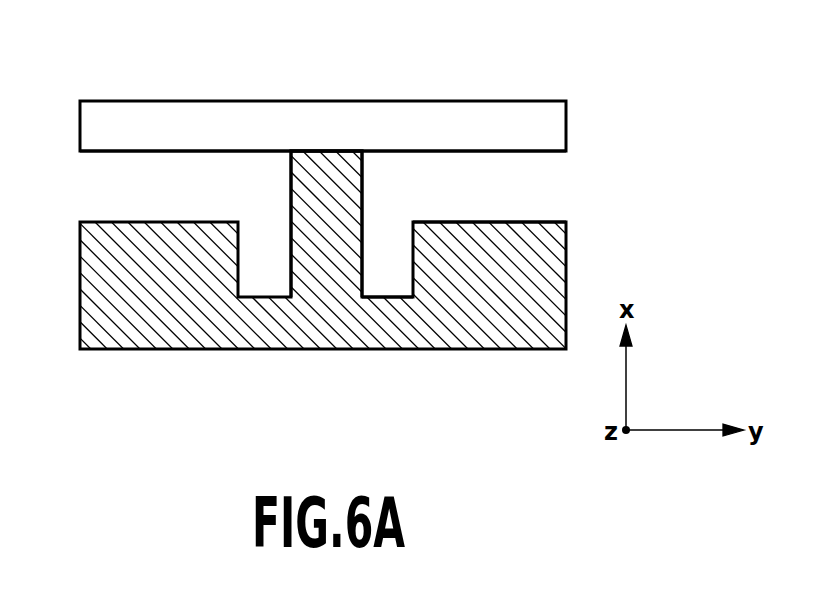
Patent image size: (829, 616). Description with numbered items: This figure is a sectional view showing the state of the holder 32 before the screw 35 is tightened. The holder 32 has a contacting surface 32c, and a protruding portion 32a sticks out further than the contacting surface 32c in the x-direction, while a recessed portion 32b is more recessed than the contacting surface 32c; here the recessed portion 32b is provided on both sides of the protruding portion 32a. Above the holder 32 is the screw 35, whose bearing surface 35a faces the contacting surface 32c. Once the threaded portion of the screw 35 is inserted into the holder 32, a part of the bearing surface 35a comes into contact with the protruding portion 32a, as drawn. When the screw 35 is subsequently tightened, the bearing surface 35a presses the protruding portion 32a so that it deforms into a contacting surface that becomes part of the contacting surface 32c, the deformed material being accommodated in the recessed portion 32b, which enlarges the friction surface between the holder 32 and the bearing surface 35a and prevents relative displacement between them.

The holder 32 is at (238, 385).
The protruding portion 32a is at (327, 162).
The recessed portion 32b is at (384, 289).
The contacting surface 32c is at (517, 222).
The screw 35 is at (566, 124).
The bearing surface 35a is at (110, 152).